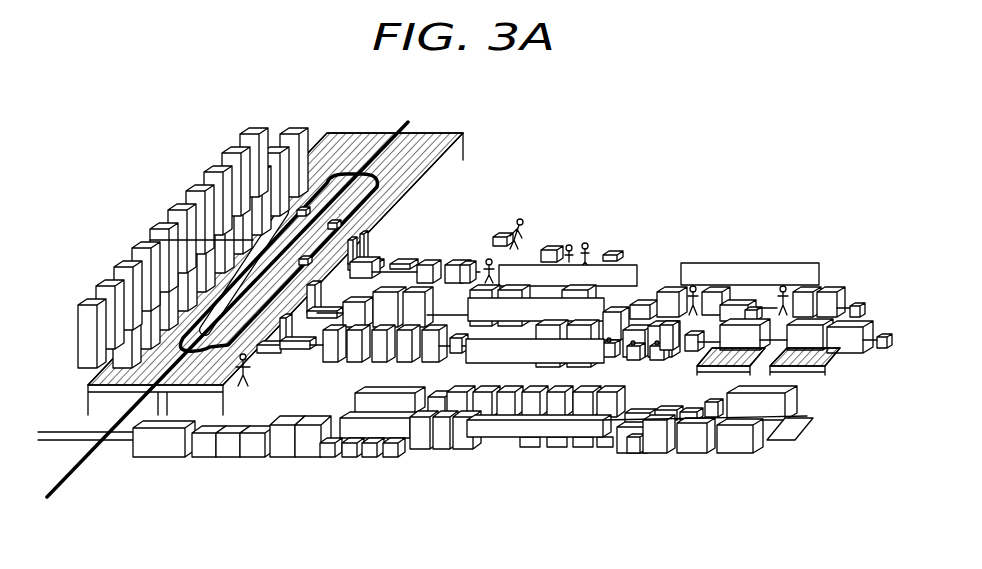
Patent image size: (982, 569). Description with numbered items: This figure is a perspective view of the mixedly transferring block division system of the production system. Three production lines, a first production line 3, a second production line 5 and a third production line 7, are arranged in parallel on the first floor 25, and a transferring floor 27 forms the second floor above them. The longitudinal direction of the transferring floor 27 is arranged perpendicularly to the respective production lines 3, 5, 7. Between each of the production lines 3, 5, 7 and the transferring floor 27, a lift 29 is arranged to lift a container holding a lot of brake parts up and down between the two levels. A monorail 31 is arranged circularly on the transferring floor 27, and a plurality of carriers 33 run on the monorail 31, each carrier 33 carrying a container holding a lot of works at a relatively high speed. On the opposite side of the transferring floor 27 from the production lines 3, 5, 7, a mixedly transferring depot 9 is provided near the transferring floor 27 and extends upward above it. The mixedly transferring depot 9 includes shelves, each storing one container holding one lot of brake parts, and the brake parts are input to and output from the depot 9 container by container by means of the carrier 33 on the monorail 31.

The first production line 3 is at (618, 303).
The second production line 5 is at (630, 263).
The third production line 7 is at (598, 363).
The mixedly transferring depot 9 is at (146, 178).
The first floor 25 is at (517, 204).
The transferring floor 27 is at (463, 133).
The lift 29 is at (368, 249).
The monorail 31 is at (330, 178).
The carrier 33 is at (375, 210).